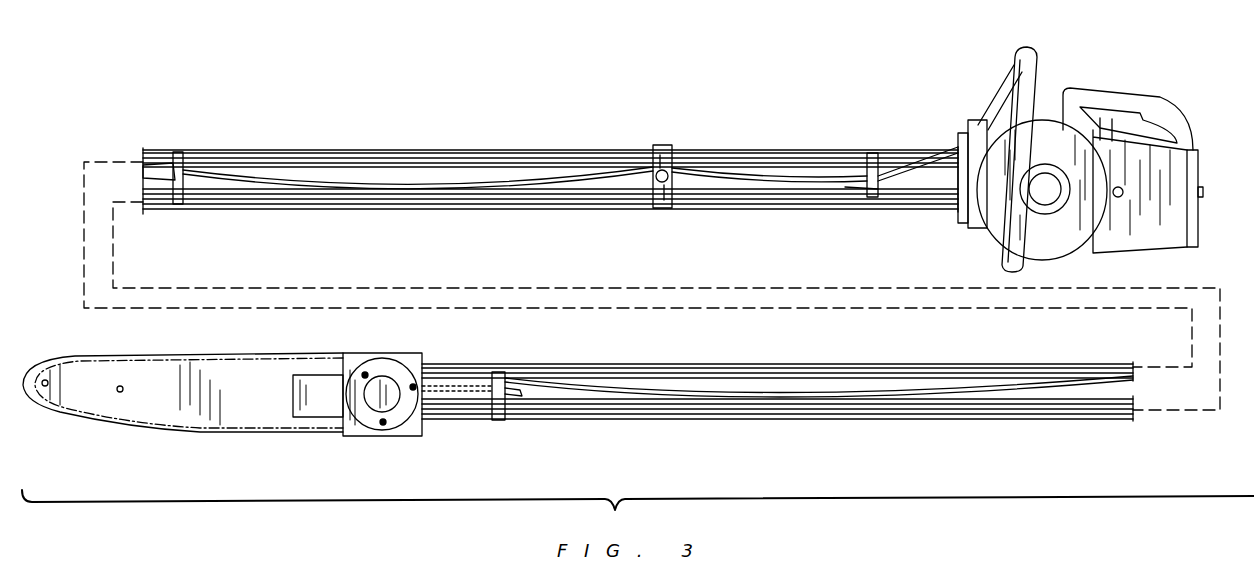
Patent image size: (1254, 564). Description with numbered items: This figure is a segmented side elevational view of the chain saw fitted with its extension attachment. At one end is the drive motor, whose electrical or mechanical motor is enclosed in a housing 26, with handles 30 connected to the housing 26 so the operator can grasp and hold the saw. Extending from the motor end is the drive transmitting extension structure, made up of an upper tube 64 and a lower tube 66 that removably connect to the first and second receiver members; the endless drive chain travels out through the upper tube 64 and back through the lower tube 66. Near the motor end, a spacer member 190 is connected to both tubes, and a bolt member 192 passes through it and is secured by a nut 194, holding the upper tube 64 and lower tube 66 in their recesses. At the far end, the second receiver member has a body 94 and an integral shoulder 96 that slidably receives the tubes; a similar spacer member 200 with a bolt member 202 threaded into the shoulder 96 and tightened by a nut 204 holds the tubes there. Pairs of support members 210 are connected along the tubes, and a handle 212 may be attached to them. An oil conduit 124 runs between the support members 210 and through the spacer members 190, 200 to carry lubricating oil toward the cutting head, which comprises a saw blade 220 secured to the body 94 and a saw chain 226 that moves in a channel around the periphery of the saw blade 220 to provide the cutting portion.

The housing 26 is at (1173, 203).
The handles 30 is at (1030, 62).
The upper tube 64 is at (748, 150).
The lower tube 66 is at (658, 208).
The body 94 is at (293, 415).
The shoulder 96 is at (343, 435).
The oil conduit 124 is at (247, 180).
The spacer member 190 is at (908, 158).
The bolt member 192 is at (958, 210).
The nut 194 is at (860, 190).
The spacer member 200 is at (492, 420).
The bolt member 202 is at (457, 400).
The nut 204 is at (520, 392).
The support members 210 is at (185, 155).
The handle 212 is at (650, 145).
The saw blade 220 is at (202, 432).
The saw chain 226 is at (177, 355).